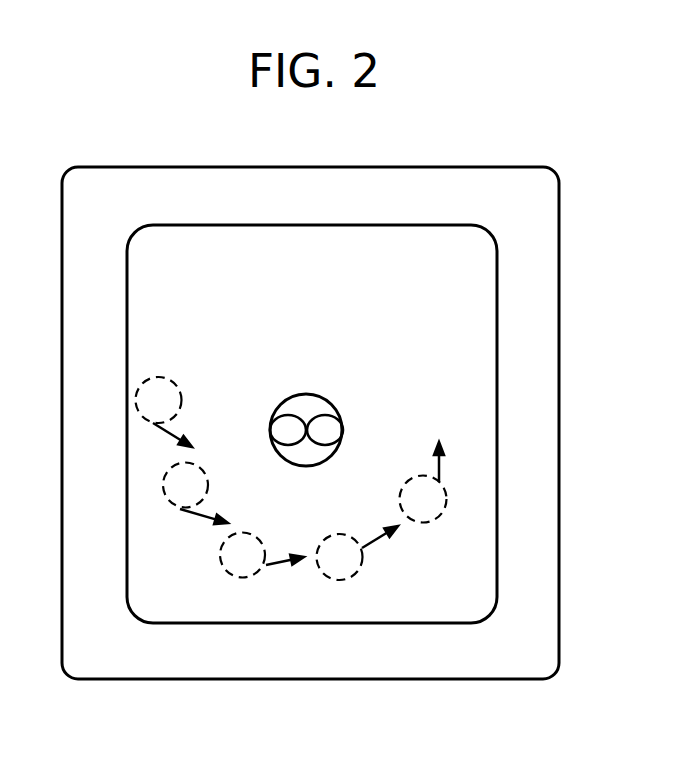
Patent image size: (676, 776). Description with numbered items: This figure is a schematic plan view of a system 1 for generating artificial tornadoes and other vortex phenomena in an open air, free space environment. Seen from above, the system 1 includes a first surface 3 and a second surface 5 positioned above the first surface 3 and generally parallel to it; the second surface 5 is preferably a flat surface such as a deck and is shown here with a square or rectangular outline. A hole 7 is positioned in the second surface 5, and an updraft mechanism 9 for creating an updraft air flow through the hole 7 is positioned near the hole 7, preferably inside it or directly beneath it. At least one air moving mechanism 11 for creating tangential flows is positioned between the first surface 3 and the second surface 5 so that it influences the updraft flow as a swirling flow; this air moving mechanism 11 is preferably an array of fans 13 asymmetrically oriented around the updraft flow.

The system 1 is at (161, 155).
The first surface 3 is at (403, 679).
The second surface 5 is at (373, 623).
The hole 7 is at (307, 457).
The updraft mechanism 9 is at (312, 426).
The air moving mechanism 11 is at (196, 564).
The fans 13 is at (182, 400).